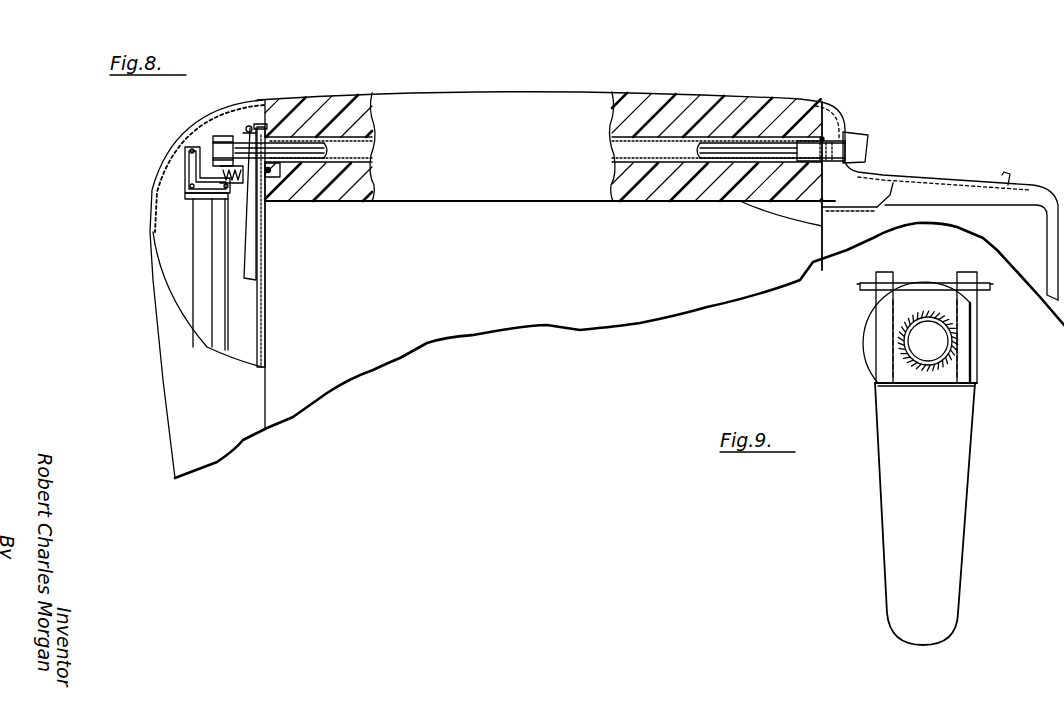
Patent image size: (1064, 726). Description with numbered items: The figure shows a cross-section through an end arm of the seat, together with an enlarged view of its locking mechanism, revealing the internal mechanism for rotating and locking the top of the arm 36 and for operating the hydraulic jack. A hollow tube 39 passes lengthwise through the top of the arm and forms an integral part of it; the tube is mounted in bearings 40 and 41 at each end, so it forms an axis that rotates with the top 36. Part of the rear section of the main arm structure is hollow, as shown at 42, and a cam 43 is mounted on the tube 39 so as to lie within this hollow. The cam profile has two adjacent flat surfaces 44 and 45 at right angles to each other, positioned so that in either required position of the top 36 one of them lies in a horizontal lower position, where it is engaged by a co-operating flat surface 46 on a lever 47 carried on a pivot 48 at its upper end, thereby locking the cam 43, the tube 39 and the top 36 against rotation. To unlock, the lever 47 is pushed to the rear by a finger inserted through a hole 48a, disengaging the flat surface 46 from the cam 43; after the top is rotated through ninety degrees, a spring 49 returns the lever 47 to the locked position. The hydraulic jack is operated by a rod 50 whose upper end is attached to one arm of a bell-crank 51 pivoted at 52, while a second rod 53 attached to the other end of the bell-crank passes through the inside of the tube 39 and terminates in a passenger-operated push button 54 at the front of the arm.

In FIG. 8, the top of the arm 36 is at (496, 120).
In FIG. 8, the hollow tube 39 is at (340, 137).
In FIG. 8, the bearing 40 is at (218, 136).
In FIG. 8, the bearing 41 is at (822, 137).
In FIG. 8, the hollow 42 is at (182, 208).
In FIG. 8, the cam 43 is at (262, 124).
In FIG. 9, the cam 43 is at (930, 300).
In FIG. 9, the flat surface 44 is at (972, 343).
In FIG. 8, the flat surface 45 is at (274, 166).
In FIG. 9, the flat surface 45 is at (918, 380).
In FIG. 8, the co-operating flat surface 46 is at (268, 178).
In FIG. 9, the co-operating flat surface 46 is at (925, 386).
In FIG. 8, the lever 47 is at (254, 240).
In FIG. 9, the lever 47 is at (925, 456).
In FIG. 8, the pivot 48 is at (249, 126).
In FIG. 9, the pivot 48 is at (910, 285).
In FIG. 8, the hole 48a is at (265, 262).
In FIG. 8, the spring 49 is at (222, 165).
In FIG. 8, the rod 50 is at (228, 323).
In FIG. 8, the bell-crank 51 is at (222, 190).
In FIG. 8, the pivot 52 is at (190, 183).
In FIG. 8, the second rod 53 is at (303, 150).
In FIG. 8, the push button 54 is at (858, 140).